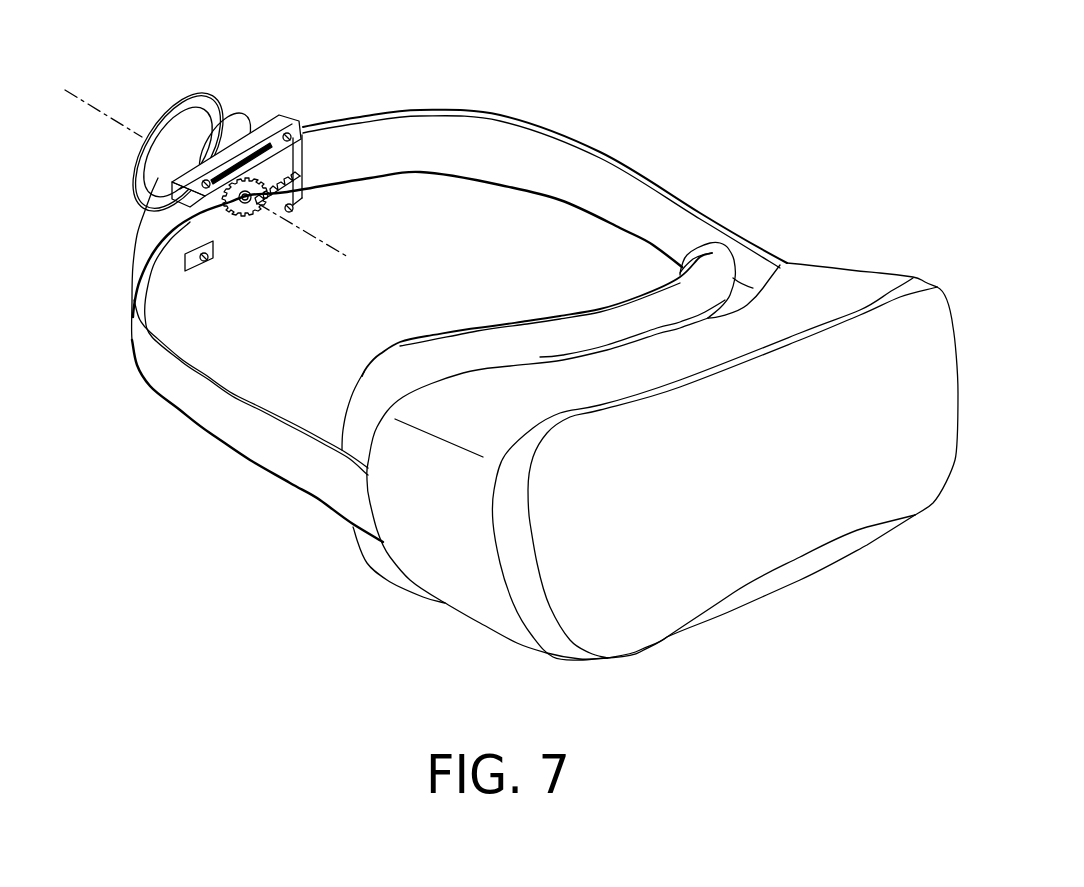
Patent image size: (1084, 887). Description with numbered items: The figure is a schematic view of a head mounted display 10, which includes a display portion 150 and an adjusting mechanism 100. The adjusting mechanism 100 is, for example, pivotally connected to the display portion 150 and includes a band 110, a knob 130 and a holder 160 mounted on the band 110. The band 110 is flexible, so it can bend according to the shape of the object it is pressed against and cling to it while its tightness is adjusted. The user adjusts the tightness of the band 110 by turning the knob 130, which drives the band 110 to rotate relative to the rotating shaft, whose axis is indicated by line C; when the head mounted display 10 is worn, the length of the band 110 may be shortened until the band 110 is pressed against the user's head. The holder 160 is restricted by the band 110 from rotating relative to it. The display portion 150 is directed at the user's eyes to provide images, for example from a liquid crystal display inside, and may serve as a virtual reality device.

The head mounted display 10 is at (785, 85).
The adjusting mechanism 100 is at (277, 107).
The band 110 is at (537, 168).
The knob 130 is at (212, 110).
The display portion 150 is at (815, 287).
The holder 160 is at (227, 137).
The rotation axis C is at (108, 118).